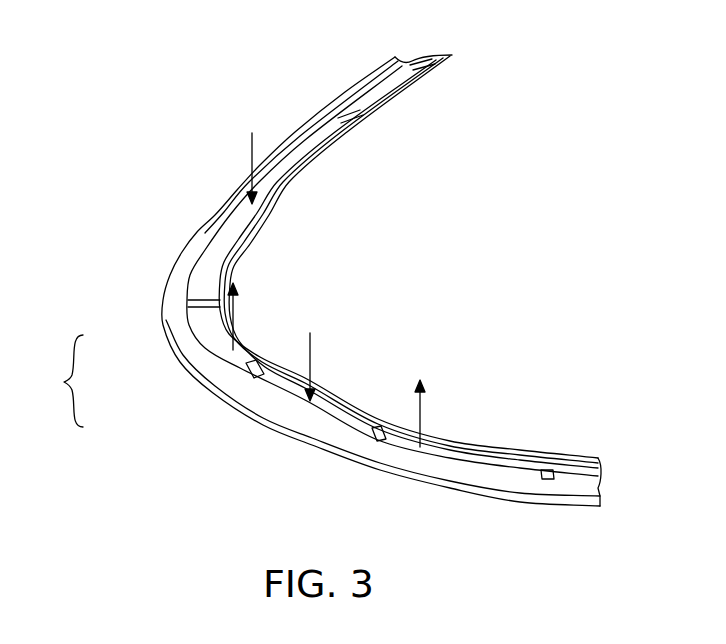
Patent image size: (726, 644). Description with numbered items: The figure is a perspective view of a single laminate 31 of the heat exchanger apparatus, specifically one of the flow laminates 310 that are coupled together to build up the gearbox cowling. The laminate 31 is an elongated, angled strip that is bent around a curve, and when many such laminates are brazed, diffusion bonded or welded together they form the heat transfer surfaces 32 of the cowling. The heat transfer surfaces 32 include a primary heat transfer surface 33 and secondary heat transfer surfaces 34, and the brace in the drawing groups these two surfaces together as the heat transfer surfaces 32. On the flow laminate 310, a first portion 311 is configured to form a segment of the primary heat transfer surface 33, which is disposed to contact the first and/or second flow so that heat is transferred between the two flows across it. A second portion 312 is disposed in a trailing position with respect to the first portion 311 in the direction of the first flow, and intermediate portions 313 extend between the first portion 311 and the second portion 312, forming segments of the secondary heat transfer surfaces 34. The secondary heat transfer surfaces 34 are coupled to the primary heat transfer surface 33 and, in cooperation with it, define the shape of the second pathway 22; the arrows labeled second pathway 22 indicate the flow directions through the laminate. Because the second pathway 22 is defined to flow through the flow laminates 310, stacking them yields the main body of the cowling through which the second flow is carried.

The second pathway 22 is at (251, 152).
The laminate 31 is at (343, 280).
The flow laminate 310 is at (312, 444).
The first portion 311 is at (175, 313).
The second portion 312 is at (222, 272).
The intermediate portion 313 is at (193, 298).
The heat transfer surfaces 32 is at (58, 381).
The primary heat transfer surface 33 is at (163, 340).
The secondary heat transfer surfaces 34 is at (247, 378).